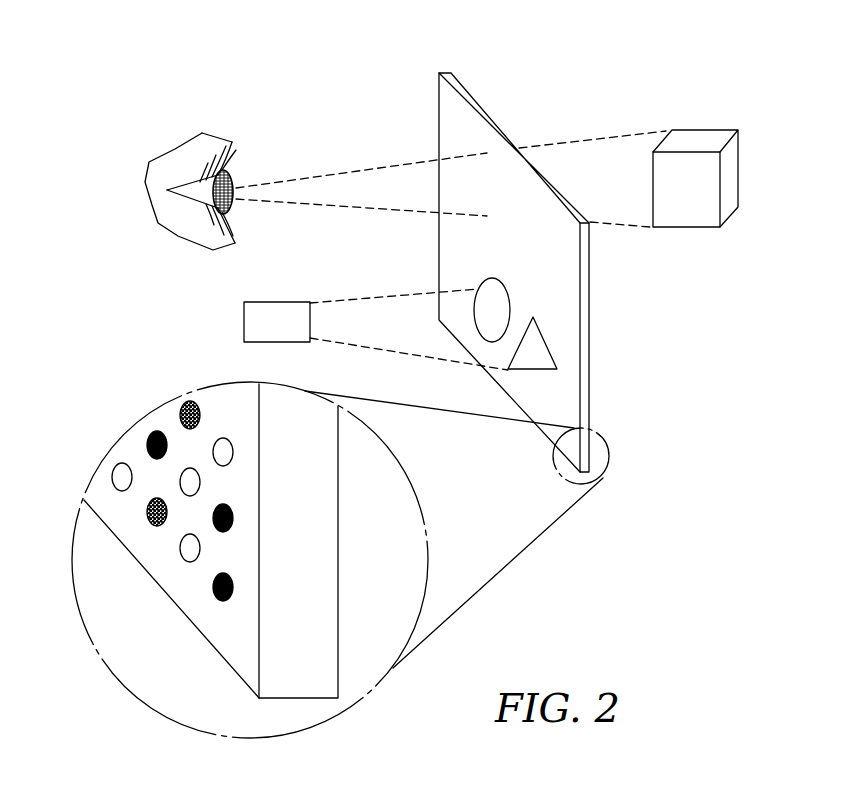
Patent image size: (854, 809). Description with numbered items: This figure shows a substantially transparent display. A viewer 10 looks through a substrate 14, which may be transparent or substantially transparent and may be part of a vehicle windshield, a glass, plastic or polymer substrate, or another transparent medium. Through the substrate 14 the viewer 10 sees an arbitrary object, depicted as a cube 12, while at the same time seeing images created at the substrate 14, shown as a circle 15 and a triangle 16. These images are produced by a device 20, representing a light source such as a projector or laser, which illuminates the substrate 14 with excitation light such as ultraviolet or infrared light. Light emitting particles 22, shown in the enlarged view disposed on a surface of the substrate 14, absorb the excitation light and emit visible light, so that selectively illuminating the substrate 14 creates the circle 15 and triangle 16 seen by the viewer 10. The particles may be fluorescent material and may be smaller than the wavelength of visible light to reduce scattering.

The viewer 10 is at (233, 176).
The cube 12 is at (698, 140).
The substrate 14 is at (505, 140).
The circle 15 is at (480, 303).
The triangle 16 is at (523, 350).
The device 20 is at (277, 302).
The light emitting particles 22 is at (182, 413).